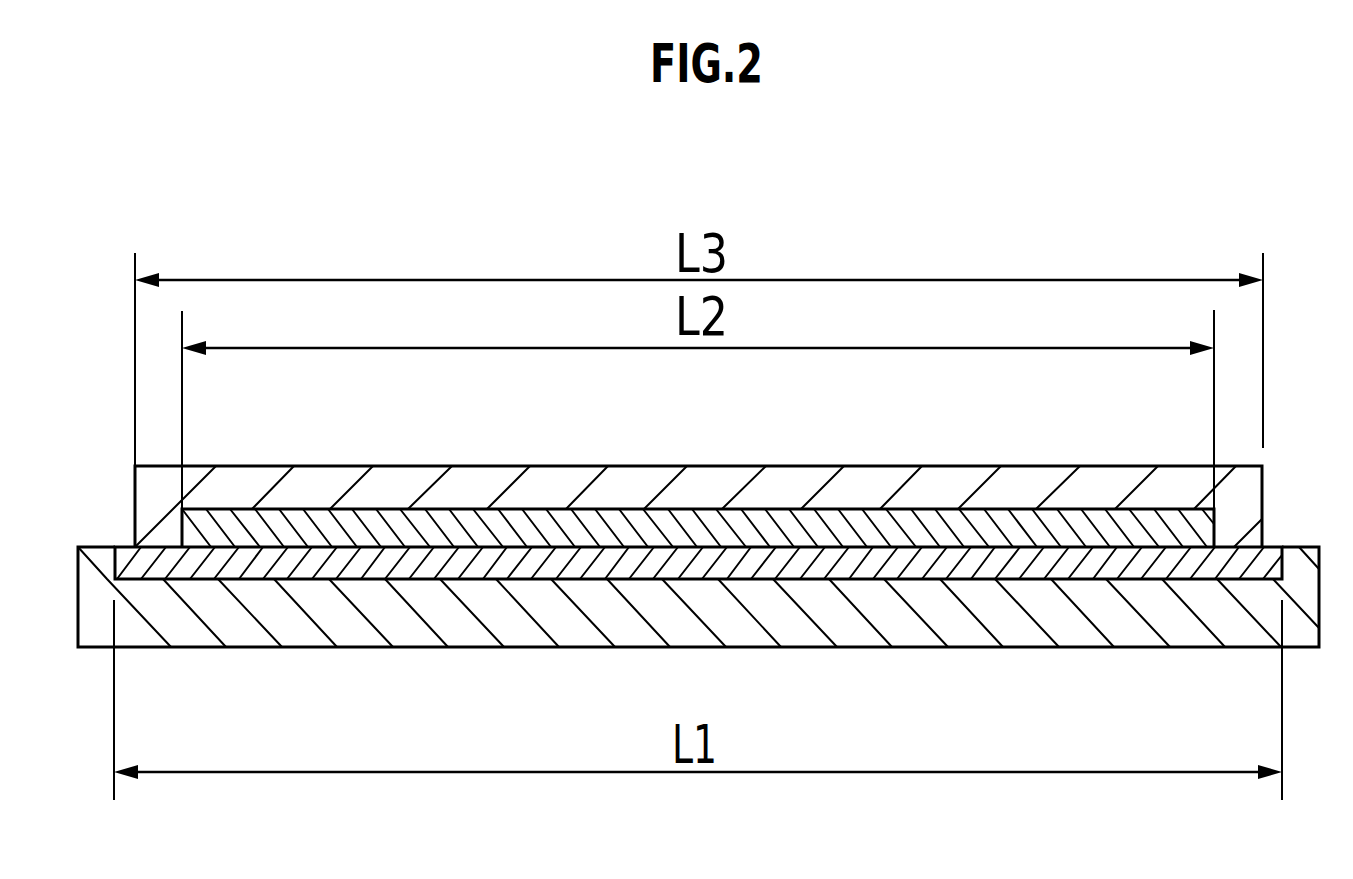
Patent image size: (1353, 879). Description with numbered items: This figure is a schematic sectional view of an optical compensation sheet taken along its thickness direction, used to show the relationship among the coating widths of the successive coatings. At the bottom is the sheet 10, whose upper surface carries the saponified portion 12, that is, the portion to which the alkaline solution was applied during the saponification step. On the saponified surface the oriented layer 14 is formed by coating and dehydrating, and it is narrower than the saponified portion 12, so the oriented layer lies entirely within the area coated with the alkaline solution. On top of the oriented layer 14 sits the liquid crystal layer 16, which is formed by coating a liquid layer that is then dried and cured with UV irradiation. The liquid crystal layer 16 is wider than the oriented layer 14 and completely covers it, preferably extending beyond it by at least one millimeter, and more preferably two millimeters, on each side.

The sheet 10 is at (1137, 622).
The saponified portion 12 is at (1035, 565).
The oriented layer 14 is at (1038, 520).
The liquid crystal layer 16 is at (800, 483).